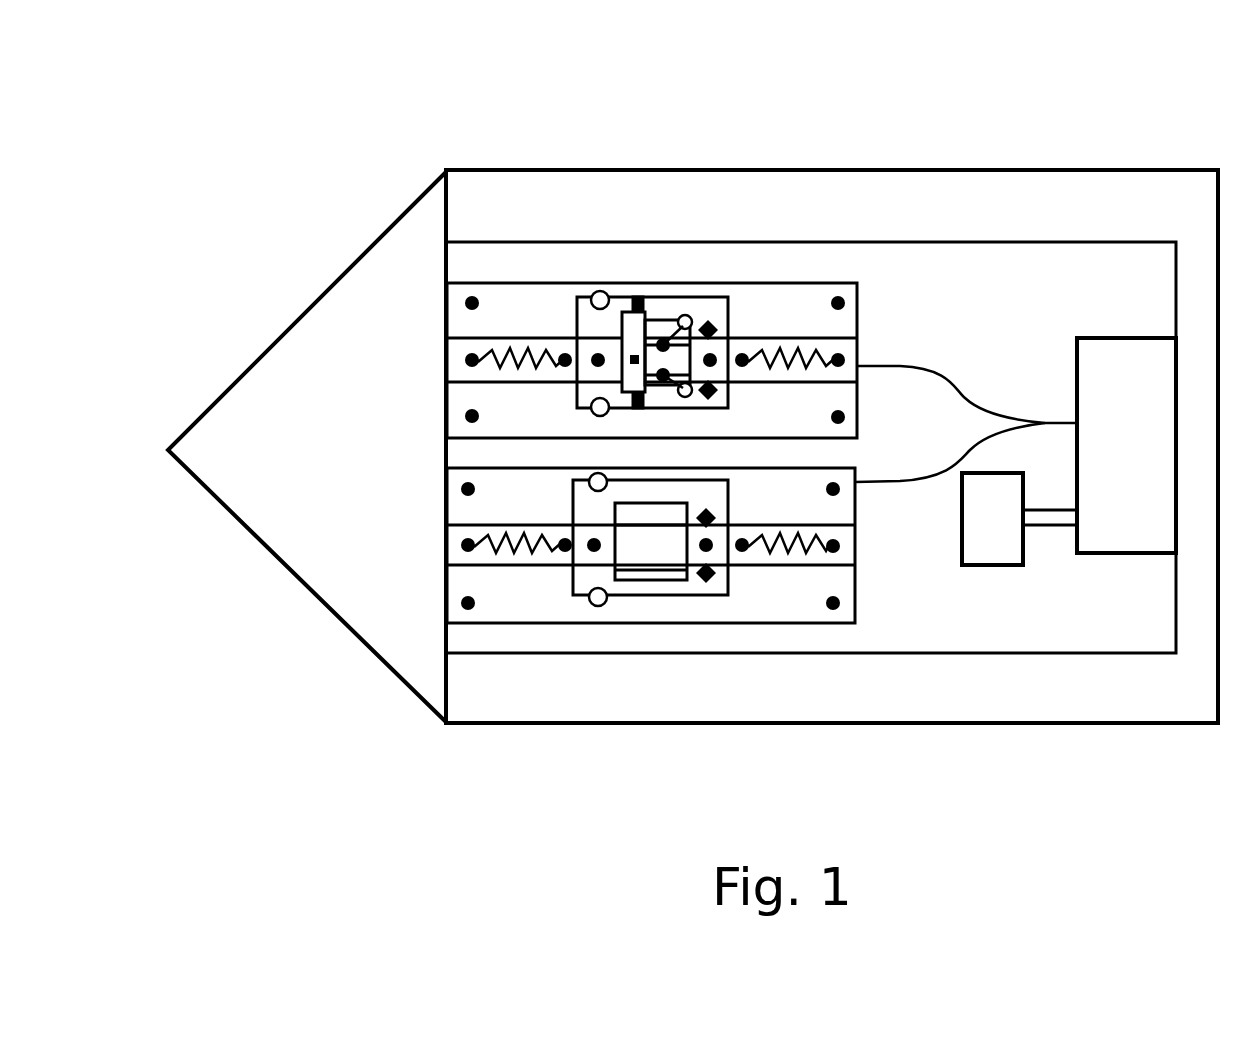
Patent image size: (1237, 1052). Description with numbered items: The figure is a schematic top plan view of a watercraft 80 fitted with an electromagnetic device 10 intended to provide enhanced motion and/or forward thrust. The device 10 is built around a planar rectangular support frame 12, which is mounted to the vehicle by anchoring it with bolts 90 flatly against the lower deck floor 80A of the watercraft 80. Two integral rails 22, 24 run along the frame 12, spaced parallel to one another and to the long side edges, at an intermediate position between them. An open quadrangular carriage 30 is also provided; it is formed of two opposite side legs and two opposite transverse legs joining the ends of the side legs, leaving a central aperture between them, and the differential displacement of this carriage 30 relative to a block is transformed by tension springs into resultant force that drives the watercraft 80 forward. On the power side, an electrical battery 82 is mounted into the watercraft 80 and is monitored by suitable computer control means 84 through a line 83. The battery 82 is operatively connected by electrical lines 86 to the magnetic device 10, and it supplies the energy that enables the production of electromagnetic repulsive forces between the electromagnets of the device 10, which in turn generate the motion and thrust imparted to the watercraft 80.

The electromagnetic device 10 is at (527, 225).
The planar rectangular support frame 12 is at (505, 296).
The integral rail 22 is at (533, 567).
The integral rail 24 is at (822, 523).
The open quadrangular carriage 30 is at (688, 606).
The watercraft 80 is at (808, 200).
The lower deck floor 80A is at (972, 318).
The electrical battery 82 is at (1125, 553).
The line 83 is at (1043, 540).
The computer control means 84 is at (992, 565).
The electrical lines 86 is at (923, 473).
The bolts 90 is at (840, 300).